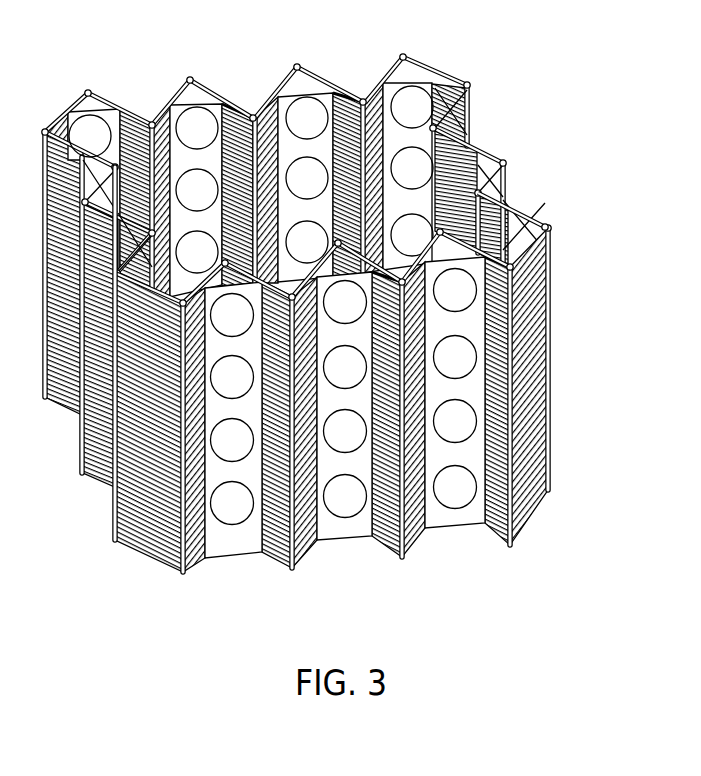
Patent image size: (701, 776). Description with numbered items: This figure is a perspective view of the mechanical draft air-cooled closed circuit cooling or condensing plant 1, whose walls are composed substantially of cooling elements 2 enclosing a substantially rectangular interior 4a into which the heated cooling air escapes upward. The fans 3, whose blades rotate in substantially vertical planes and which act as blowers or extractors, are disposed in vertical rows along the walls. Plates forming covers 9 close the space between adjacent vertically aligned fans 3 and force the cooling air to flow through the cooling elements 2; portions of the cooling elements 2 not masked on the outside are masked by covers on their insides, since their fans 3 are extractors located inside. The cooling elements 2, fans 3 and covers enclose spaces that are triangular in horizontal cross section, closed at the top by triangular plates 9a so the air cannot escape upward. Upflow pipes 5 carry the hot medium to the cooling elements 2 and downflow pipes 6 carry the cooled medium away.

The plant 1 is at (492, 58).
The cooling elements 2 is at (153, 552).
The fans 3 is at (348, 490).
The rectangular interior 4a is at (317, 118).
The upflow pipes 5 is at (400, 560).
The downflow pipes 6 is at (335, 244).
The covers 9 is at (333, 536).
The triangular plates 9a is at (527, 222).